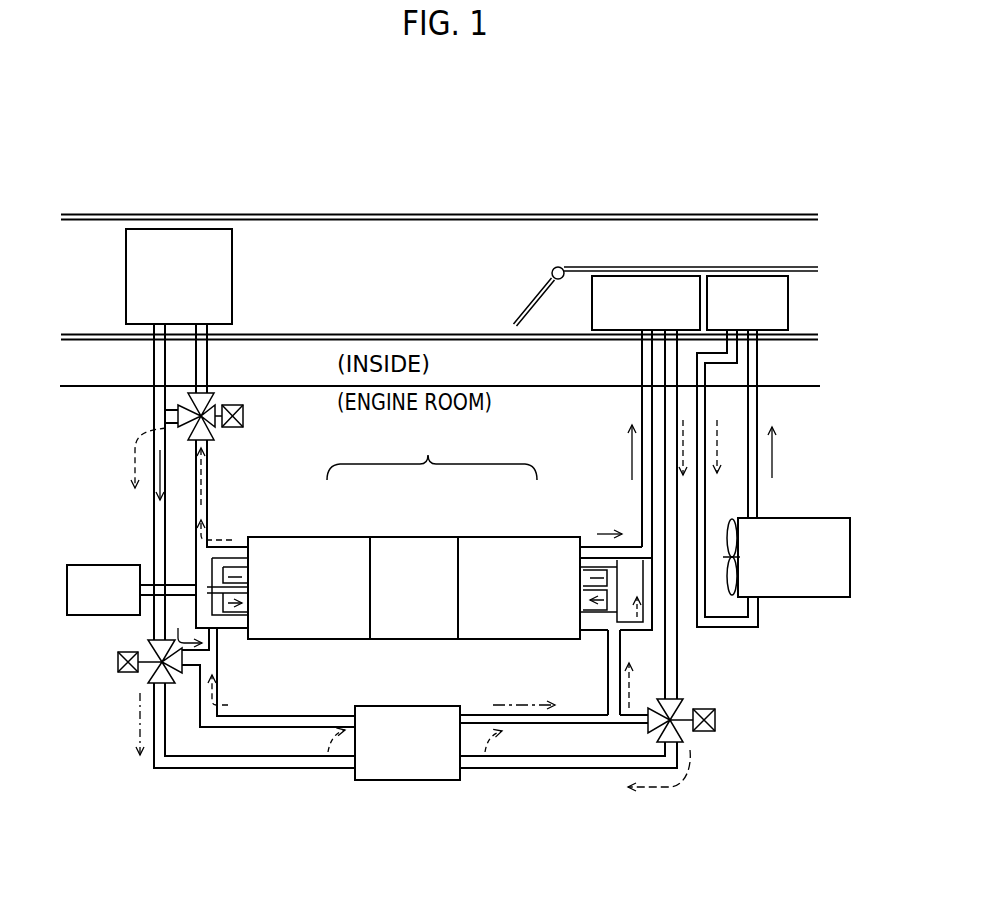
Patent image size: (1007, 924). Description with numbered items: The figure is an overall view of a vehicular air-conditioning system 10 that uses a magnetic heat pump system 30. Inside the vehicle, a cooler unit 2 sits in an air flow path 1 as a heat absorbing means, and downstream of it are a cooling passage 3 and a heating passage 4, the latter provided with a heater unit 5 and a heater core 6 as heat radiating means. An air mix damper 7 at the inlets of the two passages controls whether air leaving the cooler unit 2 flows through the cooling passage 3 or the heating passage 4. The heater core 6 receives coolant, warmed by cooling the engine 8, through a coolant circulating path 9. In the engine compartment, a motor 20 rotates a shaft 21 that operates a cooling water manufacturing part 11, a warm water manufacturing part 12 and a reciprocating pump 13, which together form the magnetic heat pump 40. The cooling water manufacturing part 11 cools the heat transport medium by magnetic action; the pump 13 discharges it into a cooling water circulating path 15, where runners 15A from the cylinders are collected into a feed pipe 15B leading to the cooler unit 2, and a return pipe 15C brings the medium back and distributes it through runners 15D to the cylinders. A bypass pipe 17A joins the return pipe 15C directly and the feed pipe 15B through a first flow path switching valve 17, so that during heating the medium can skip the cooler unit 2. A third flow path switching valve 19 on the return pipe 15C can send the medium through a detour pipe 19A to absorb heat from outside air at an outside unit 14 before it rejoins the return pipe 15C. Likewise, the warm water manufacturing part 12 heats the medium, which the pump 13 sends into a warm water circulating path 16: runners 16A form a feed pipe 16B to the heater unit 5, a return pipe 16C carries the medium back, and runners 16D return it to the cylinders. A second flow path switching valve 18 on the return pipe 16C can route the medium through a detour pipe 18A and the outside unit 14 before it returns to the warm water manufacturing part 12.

The air flow path 1 is at (627, 212).
The cooler unit 2 is at (233, 268).
The cooling passage 3 is at (812, 255).
The heating passage 4 is at (812, 328).
The heater unit 5 is at (592, 303).
The heater core 6 is at (789, 292).
The air mix damper 7 is at (536, 296).
The engine 8 is at (825, 517).
The coolant circulating path 9 is at (757, 405).
The vehicular air-conditioning system 10 is at (748, 205).
The cooling water manufacturing part 11 is at (338, 537).
The warm water manufacturing part 12 is at (519, 537).
The reciprocating pump 13 is at (426, 537).
The outside unit 14 is at (410, 706).
The cooling water circulating path 15 is at (155, 533).
The runner 15A is at (241, 537).
The feed pipe 15B is at (210, 363).
The return pipe 15C is at (150, 402).
The runner 15D is at (238, 618).
The warm water circulating path 16 is at (642, 402).
The runner 16A is at (635, 546).
The feed pipe 16B is at (642, 362).
The return pipe 16C is at (678, 655).
The runner 16D is at (598, 622).
The first flow path switching valve 17 is at (245, 418).
The bypass pipe 17A is at (173, 408).
The second flow path switching valve 18 is at (717, 720).
The detour pipe 18A is at (508, 770).
The third flow path switching valve 19 is at (118, 665).
The detour pipe 19A is at (236, 770).
The motor 20 is at (82, 562).
The shaft 21 is at (187, 583).
The magnetic heat pump system 30 is at (748, 747).
The magnetic heat pump 40 is at (432, 455).